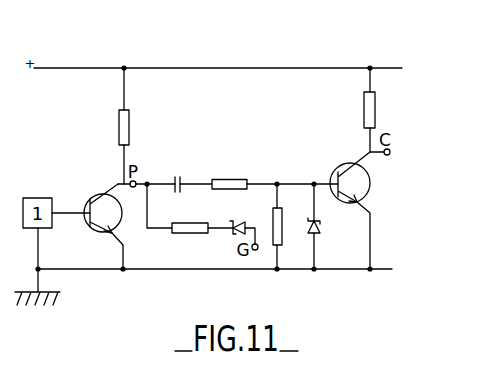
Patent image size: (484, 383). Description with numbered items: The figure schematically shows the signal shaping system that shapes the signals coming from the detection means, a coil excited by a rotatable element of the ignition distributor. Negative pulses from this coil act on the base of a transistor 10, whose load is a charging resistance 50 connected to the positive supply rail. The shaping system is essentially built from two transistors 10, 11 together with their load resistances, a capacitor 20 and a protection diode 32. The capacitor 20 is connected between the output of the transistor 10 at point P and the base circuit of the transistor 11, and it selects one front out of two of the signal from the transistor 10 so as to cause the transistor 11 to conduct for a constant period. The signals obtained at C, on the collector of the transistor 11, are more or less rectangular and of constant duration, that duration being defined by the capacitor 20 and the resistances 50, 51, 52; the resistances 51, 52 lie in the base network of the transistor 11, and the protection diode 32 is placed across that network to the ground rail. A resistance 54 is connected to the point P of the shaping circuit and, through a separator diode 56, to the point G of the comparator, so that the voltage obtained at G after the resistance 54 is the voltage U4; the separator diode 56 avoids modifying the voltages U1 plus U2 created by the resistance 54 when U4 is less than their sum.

The transistor 10 is at (86, 198).
The charging resistance 50 is at (117, 130).
The resistance 54 is at (182, 222).
The capacitor 20 is at (180, 177).
The resistance 51 is at (228, 179).
The separator diode 56 is at (240, 220).
The resistance 52 is at (283, 220).
The transistor 11 is at (349, 162).
The protection diode 32 is at (320, 235).